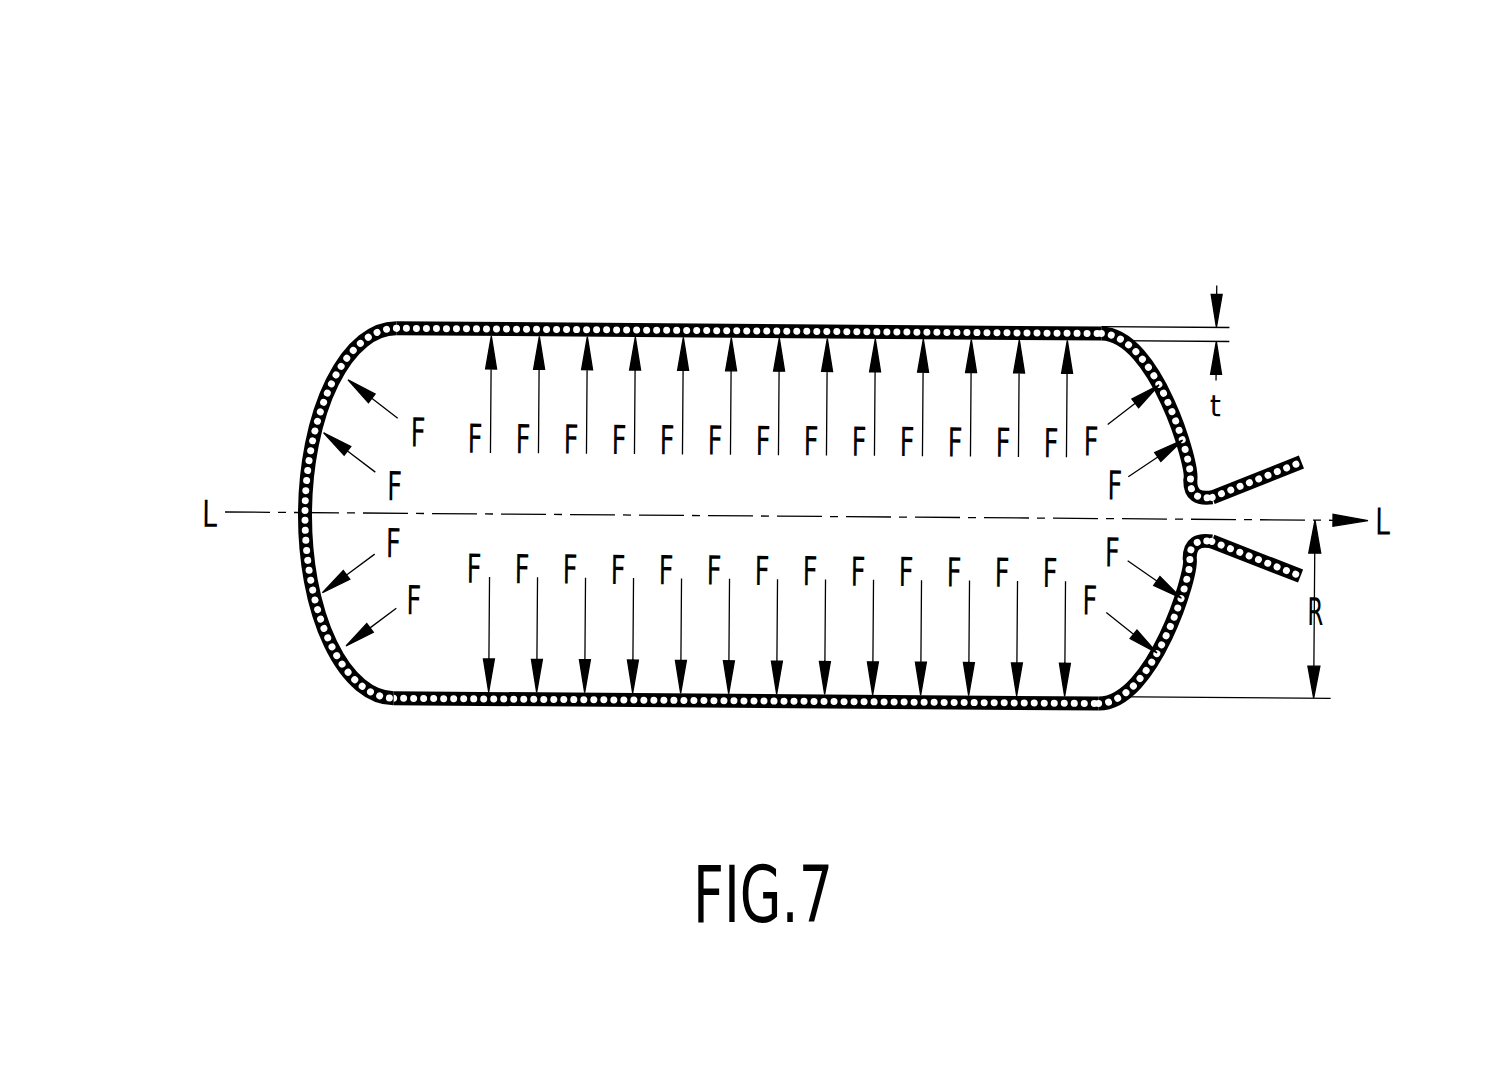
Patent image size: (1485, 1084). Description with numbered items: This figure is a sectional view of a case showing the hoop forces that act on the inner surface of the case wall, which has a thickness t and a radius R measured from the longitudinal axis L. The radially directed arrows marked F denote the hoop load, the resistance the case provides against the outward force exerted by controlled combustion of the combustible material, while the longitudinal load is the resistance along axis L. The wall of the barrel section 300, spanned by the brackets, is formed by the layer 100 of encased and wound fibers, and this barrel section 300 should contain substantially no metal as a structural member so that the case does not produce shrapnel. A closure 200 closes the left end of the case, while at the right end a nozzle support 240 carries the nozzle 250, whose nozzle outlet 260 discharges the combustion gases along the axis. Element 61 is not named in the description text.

The barrel section 300 is at (1123, 737).
The composite wrap layer 61 is at (587, 398).
The layer of encased and wound fibers 100 is at (937, 325).
The closure 200 is at (304, 451).
The nozzle support 240 is at (1212, 484).
The nozzle 250 is at (1268, 463).
The nozzle outlet 260 is at (1315, 493).